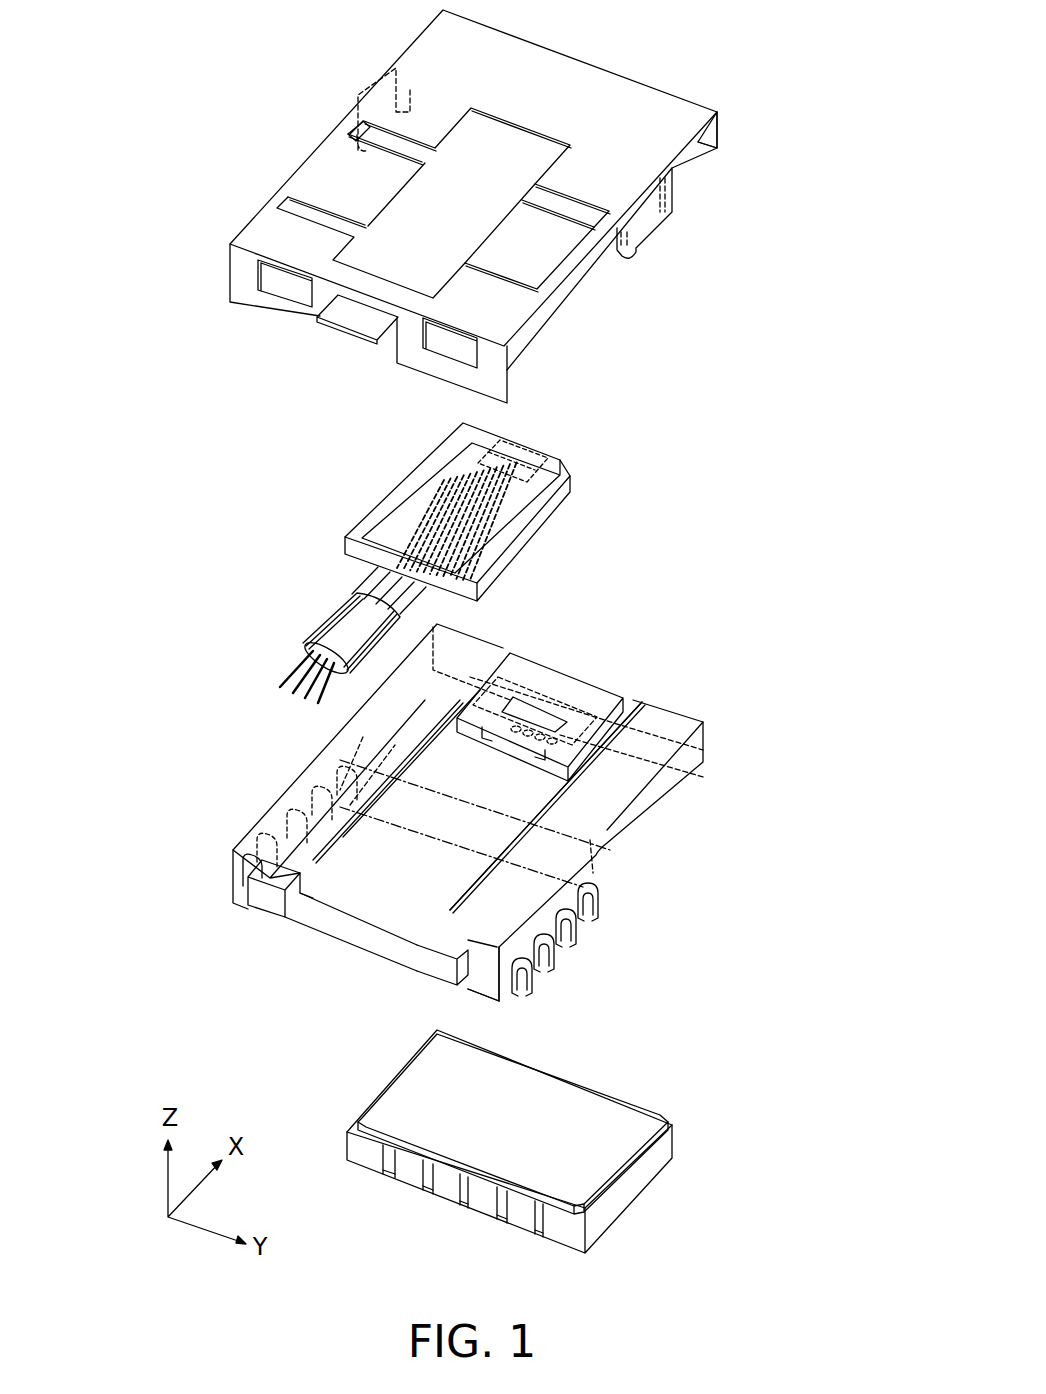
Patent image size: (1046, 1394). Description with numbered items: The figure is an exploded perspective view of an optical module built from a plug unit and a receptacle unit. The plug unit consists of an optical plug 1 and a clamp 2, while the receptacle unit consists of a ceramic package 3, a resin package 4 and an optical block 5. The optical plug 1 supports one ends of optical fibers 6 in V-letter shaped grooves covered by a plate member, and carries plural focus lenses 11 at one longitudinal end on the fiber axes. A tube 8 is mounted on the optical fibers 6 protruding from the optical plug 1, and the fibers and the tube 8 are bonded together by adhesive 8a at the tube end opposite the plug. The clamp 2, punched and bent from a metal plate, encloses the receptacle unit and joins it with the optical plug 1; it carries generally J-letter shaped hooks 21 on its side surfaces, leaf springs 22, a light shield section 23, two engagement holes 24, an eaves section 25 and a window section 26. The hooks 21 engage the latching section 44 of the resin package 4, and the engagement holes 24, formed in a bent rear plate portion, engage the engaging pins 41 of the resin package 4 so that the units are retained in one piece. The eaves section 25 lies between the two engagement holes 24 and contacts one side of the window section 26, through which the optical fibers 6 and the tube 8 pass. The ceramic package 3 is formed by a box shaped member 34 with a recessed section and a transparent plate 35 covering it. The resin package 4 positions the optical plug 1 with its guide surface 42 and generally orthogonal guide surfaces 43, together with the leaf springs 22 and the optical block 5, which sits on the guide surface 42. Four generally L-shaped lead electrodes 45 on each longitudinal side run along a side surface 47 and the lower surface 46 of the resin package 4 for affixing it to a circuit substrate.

The optical plug 1 is at (412, 508).
The clamp 2 is at (640, 103).
The ceramic package 3 is at (568, 1141).
The resin package 4 is at (673, 722).
The optical block 5 is at (590, 692).
The optical fibers 6 is at (326, 710).
The tube 8 is at (348, 615).
The adhesive 8a is at (305, 645).
The focus lens 11 is at (537, 445).
The hooks 21 is at (385, 100).
The leaf springs 22 is at (353, 180).
The light shield section 23 is at (707, 147).
The engagement holes 24 is at (283, 285).
The eaves section 25 is at (342, 315).
The window section 26 is at (362, 343).
The box shaped member 34 is at (640, 1173).
The transparent plate 35 is at (625, 1110).
The engaging pins 41 is at (265, 910).
The guide surface 42 is at (380, 900).
The guide surfaces 43 is at (323, 877).
The latching section 44 is at (673, 783).
The lead electrodes 45 is at (297, 795).
The lower surface 46 is at (470, 997).
The side surface 47 is at (503, 997).